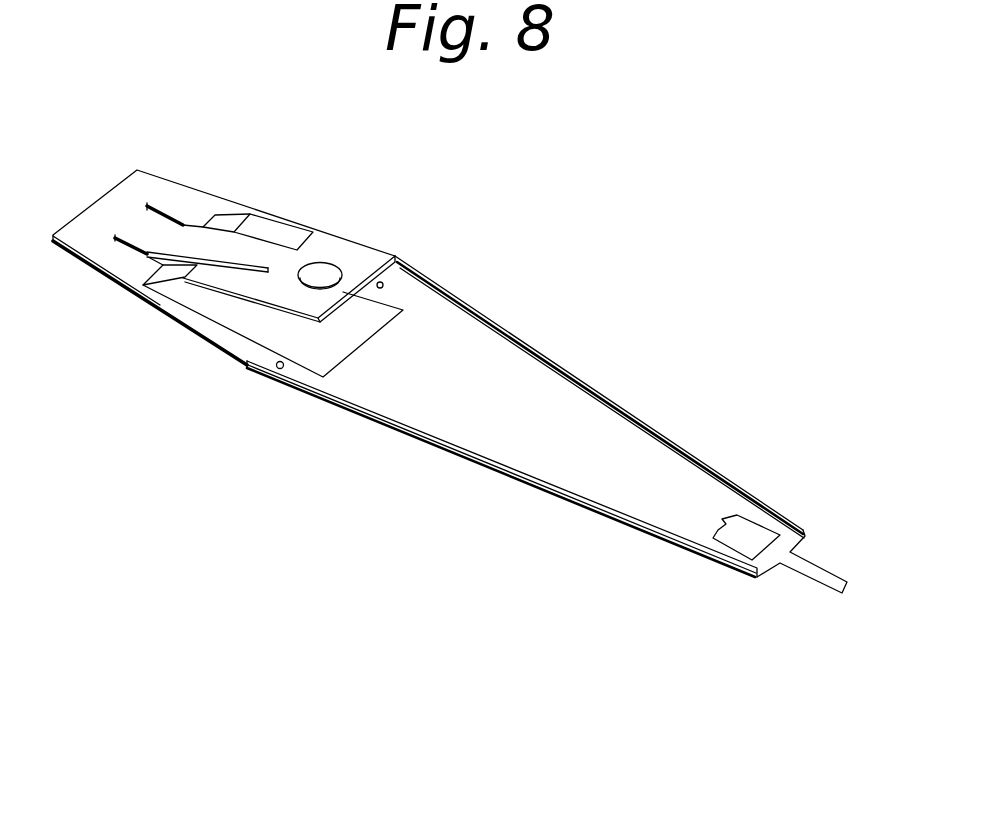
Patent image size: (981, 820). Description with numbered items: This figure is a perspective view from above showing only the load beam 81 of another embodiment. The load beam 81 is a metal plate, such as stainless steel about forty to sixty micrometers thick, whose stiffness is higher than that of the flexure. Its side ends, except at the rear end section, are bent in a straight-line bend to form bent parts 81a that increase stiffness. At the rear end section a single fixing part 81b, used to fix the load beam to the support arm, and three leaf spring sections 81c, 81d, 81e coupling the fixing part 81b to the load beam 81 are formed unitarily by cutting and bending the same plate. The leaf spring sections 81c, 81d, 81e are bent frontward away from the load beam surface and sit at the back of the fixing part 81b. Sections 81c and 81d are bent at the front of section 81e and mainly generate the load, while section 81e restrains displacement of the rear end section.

The load beam 81 is at (587, 423).
The bent parts 81a is at (543, 363).
The fixing part 81b is at (360, 262).
The leaf spring section 81c is at (278, 228).
The leaf spring section 81d is at (203, 285).
The leaf spring section 81e is at (253, 247).